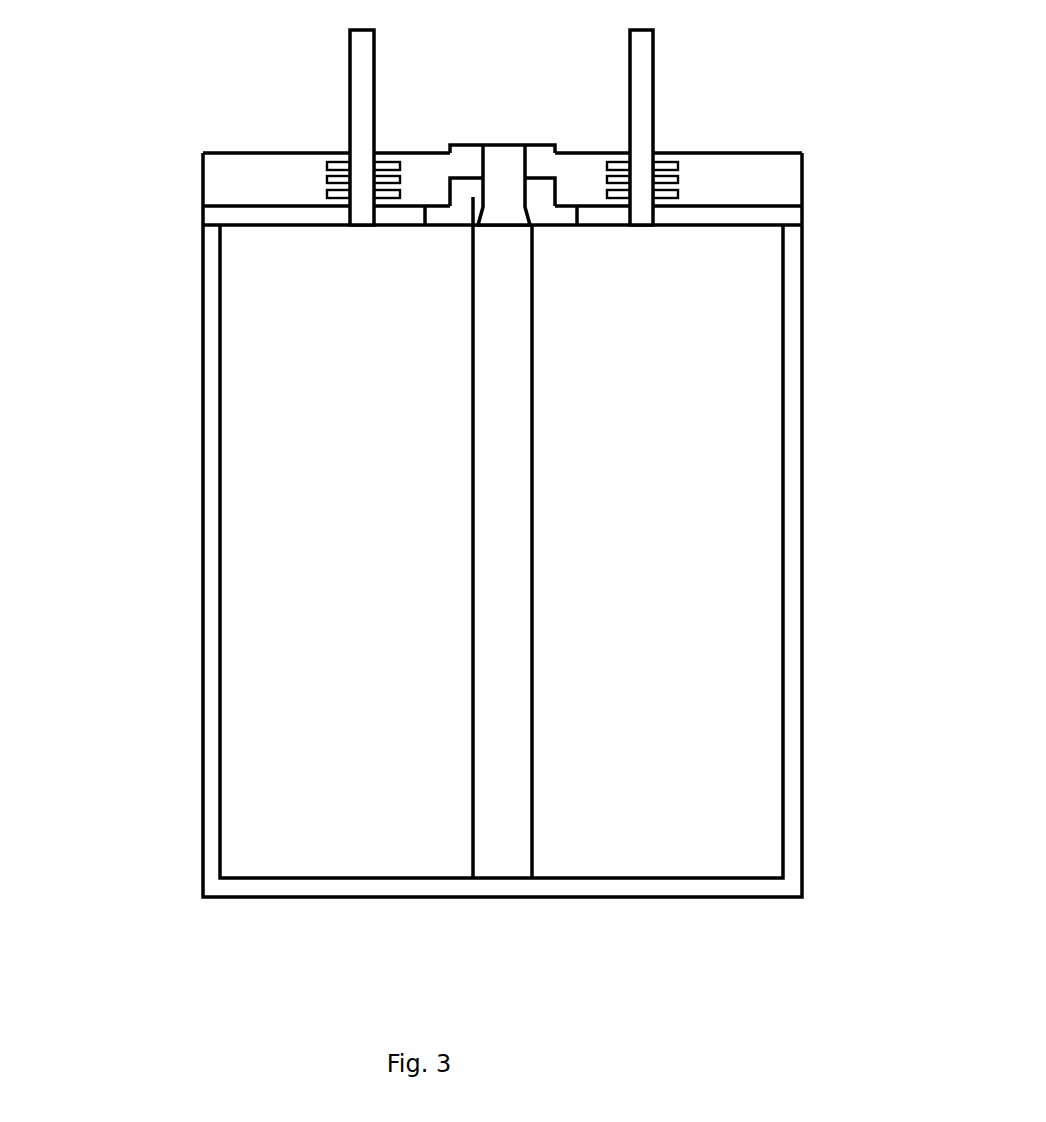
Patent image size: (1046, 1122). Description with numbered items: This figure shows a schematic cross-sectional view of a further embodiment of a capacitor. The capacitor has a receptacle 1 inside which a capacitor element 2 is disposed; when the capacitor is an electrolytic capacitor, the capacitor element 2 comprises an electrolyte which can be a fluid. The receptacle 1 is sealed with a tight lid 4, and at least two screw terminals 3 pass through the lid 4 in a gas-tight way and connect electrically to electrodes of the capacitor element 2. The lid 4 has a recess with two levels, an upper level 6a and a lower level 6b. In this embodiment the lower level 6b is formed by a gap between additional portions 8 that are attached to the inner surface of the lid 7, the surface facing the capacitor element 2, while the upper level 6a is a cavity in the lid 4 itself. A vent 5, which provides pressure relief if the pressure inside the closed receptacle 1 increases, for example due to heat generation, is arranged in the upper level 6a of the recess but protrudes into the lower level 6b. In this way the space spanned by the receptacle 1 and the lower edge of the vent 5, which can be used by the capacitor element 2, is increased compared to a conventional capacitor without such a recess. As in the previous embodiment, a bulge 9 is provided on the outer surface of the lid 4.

The receptacle 1 is at (195, 847).
The capacitor element 2 is at (230, 707).
The screw terminals 3 is at (627, 118).
The lid 4 is at (232, 166).
The vent 5 is at (503, 225).
The upper level 6a is at (473, 230).
The lower level 6b is at (565, 212).
The inner surface of the lid 7 is at (437, 212).
The additional portions 8 is at (228, 218).
The bulge 9 is at (560, 148).